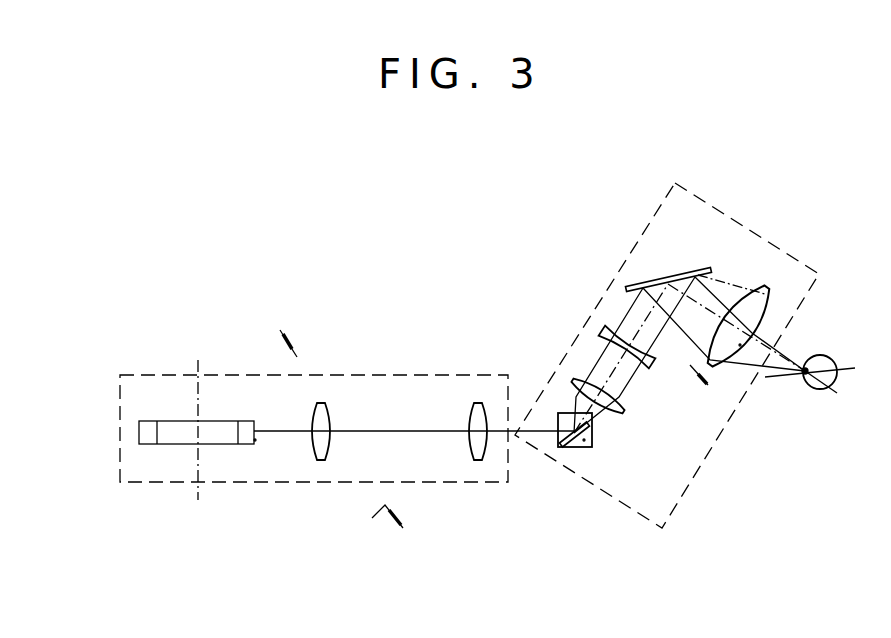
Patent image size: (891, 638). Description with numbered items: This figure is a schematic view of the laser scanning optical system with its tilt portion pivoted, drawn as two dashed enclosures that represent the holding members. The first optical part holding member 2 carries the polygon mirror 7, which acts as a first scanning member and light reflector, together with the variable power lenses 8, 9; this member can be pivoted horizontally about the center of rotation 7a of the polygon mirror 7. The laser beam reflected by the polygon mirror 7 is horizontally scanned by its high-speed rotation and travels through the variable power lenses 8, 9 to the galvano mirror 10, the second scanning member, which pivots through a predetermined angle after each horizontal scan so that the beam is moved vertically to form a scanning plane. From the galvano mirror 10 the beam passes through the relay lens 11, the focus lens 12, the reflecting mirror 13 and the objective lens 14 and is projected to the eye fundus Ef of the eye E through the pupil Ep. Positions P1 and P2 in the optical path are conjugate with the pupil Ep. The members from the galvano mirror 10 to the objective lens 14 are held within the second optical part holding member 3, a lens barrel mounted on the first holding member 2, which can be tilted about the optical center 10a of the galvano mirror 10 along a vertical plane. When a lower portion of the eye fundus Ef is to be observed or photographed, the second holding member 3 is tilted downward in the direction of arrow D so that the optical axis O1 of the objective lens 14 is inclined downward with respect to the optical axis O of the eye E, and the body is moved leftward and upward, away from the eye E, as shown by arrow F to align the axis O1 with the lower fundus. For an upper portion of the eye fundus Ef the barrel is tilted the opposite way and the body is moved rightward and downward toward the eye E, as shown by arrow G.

The first optical part holding member 2 is at (313, 484).
The second optical part holding member 3 is at (728, 430).
The polygon mirror 7 is at (238, 421).
The center of rotation 7a is at (199, 487).
The variable power lens 8 is at (333, 413).
The variable power lens 9 is at (468, 414).
The galvano mirror 10 is at (559, 447).
The optical center 10a is at (561, 448).
The relay lens 11 is at (628, 408).
The focus lens 12 is at (652, 366).
The reflecting mirror 13 is at (685, 270).
The objective lens 14 is at (760, 284).
The position conjugated with the pupil P1 is at (589, 445).
The position conjugated with the pupil P2 is at (260, 443).
The arrow F is at (299, 348).
The arrow G is at (377, 519).
The arrow D is at (690, 365).
The optical axis of the eye O is at (777, 375).
The optical axis of the objective lens O1 is at (740, 347).
The eye E is at (805, 379).
The pupil Ep is at (809, 358).
The eye fundus Ef is at (830, 362).